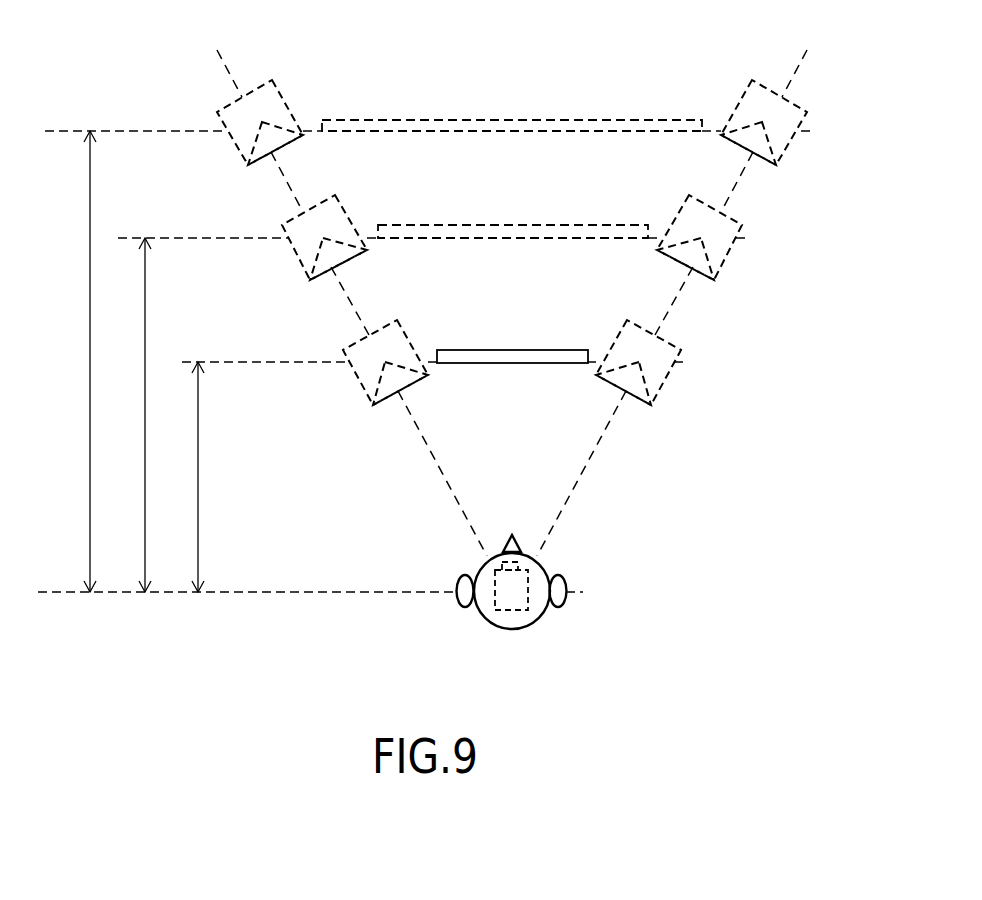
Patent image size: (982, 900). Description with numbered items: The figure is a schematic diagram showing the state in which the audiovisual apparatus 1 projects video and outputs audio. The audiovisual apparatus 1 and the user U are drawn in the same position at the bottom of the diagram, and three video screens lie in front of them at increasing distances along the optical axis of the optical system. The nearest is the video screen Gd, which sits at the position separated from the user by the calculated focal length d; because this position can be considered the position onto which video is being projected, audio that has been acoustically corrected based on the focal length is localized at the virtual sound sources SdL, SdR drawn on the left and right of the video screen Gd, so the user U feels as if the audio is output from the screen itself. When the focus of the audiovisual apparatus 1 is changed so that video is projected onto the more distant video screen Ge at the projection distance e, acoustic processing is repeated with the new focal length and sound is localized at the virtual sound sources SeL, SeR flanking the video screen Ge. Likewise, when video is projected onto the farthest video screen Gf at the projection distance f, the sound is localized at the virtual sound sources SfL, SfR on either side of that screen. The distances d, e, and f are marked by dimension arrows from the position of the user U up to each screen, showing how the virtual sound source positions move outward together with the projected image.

The virtual sound source SfL is at (243, 153).
The virtual sound source SfR is at (787, 153).
The virtual sound source SeL is at (302, 263).
The virtual sound source SeR is at (723, 263).
The virtual sound source SdL is at (365, 396).
The virtual sound source SdR is at (663, 397).
The video screen Gf is at (512, 137).
The video screen Ge is at (512, 242).
The video screen Gd is at (510, 365).
The user U is at (512, 621).
The audiovisual apparatus 1 is at (493, 617).
The projection distance f is at (80, 361).
The projection distance e is at (133, 415).
The focal length d is at (187, 477).